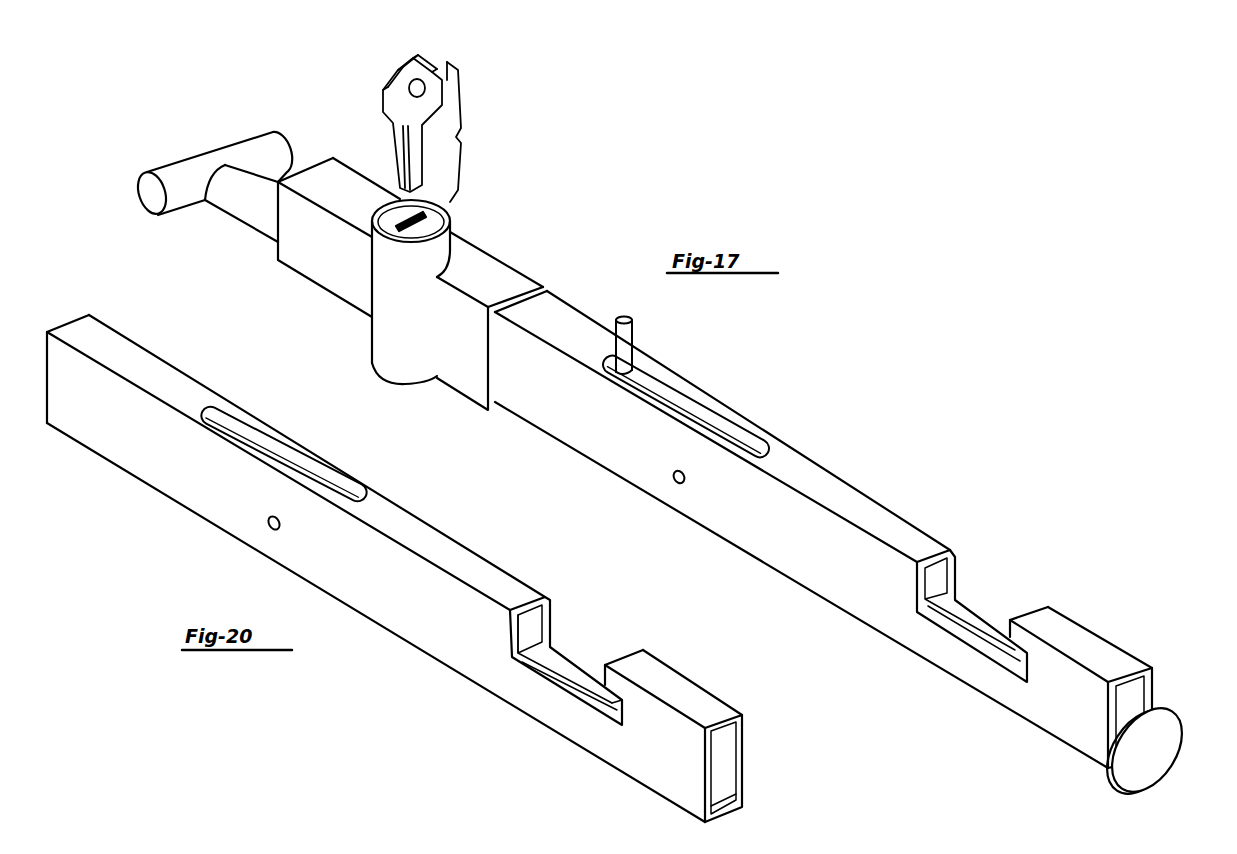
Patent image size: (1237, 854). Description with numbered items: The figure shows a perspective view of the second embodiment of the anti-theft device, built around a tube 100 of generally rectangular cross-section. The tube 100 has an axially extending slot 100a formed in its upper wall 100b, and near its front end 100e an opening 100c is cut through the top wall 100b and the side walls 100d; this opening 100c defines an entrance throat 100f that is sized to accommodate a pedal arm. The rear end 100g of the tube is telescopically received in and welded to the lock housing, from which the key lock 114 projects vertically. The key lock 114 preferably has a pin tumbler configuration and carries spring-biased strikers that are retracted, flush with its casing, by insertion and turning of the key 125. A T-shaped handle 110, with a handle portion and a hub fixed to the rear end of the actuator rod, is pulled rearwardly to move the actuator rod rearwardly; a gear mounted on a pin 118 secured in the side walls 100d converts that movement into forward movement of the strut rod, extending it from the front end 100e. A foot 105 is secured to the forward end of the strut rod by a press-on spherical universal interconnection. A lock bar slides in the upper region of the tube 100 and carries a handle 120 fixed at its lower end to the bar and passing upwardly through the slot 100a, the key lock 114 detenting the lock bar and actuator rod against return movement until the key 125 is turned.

In FIG. 20, the tube 100 is at (211, 527).
In FIG. 20, the axially extending slot 100a is at (304, 461).
In FIG. 20, the upper wall 100b is at (479, 549).
In FIG. 20, the opening 100c is at (613, 632).
In FIG. 17, the side walls 100d is at (703, 507).
In FIG. 20, the side walls 100d is at (478, 637).
In FIG. 20, the front end 100e is at (700, 687).
In FIG. 20, the entrance throat 100f is at (613, 660).
In FIG. 20, the rear end 100g is at (197, 393).
In FIG. 17, the foot 105 is at (1139, 762).
In FIG. 17, the handle 110 is at (192, 168).
In FIG. 17, the key lock 114 is at (437, 226).
In FIG. 17, the pin 118 is at (675, 482).
In FIG. 17, the handle 120 is at (614, 318).
In FIG. 17, the key 125 is at (437, 88).